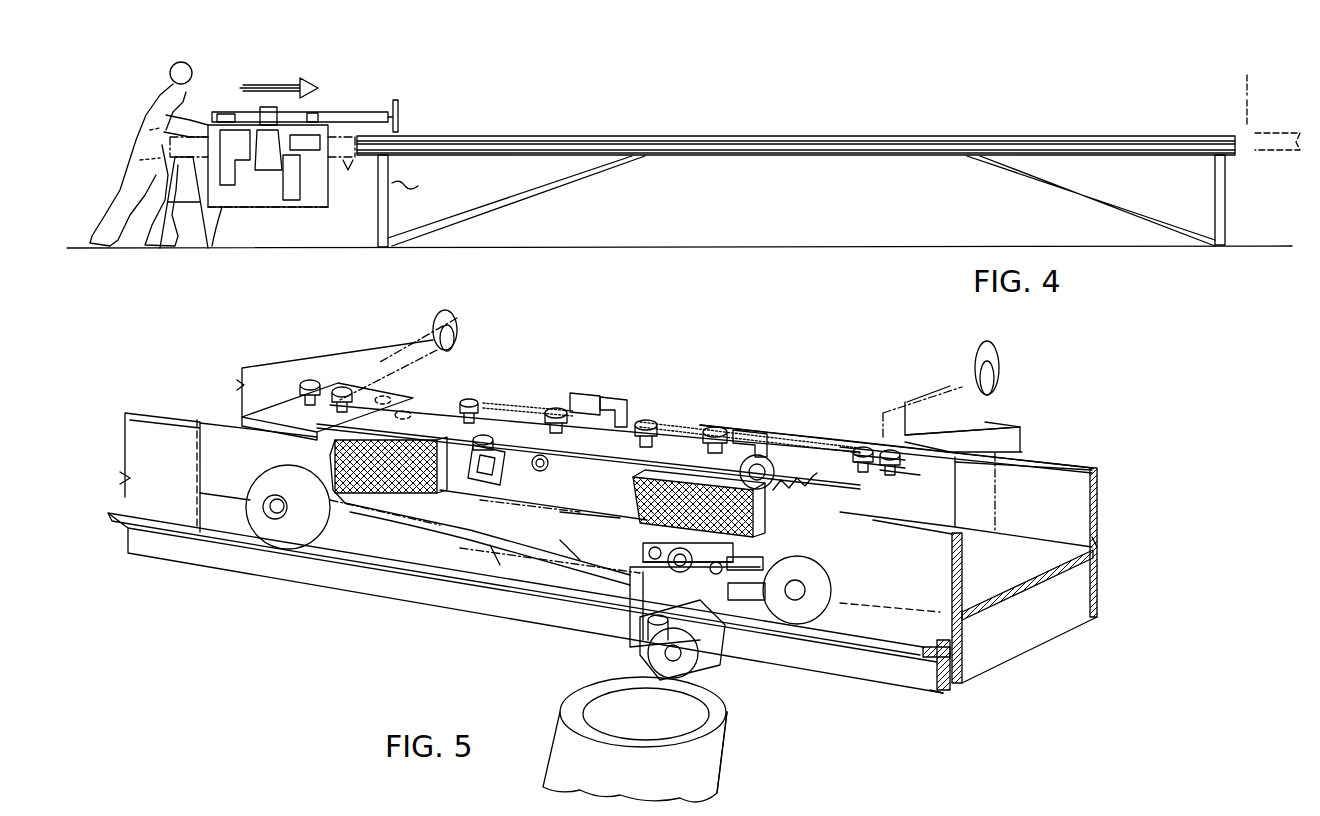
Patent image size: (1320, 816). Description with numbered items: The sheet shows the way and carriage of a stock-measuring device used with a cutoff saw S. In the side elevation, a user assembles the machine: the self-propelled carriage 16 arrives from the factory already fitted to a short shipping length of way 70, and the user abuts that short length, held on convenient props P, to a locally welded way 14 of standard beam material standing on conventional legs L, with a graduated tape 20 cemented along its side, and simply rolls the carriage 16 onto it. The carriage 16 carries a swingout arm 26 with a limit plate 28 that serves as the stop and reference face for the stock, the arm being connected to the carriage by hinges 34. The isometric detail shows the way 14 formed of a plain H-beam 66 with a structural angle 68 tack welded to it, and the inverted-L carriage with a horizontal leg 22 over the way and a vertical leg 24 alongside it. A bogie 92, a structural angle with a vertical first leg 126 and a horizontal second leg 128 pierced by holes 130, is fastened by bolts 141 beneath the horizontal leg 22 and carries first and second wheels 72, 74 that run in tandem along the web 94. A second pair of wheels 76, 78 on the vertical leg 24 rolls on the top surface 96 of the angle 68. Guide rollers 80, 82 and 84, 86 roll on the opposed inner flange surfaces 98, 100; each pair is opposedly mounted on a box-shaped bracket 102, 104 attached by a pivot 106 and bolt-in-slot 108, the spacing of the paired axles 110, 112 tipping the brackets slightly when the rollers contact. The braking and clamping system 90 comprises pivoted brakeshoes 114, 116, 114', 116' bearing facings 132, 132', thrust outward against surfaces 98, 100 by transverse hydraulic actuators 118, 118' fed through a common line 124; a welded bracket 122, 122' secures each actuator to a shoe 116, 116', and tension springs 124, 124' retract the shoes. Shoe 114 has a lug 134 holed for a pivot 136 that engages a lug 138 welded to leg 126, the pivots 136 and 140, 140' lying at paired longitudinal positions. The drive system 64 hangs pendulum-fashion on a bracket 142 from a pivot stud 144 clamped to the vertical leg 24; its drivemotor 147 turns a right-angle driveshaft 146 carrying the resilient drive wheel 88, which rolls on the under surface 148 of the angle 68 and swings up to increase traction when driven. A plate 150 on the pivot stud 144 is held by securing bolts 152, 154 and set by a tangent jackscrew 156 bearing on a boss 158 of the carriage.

In FIG. 4, the linear way 14 is at (378, 160).
In FIG. 5, the linear way 14 is at (183, 552).
In FIG. 4, the self-propelled carriage 16 is at (270, 212).
In FIG. 5, the self-propelled carriage 16 is at (346, 606).
In FIG. 4, the graduated tape 20 is at (535, 137).
In FIG. 5, the horizontal leg 22 is at (985, 440).
In FIG. 5, the vertical leg 24 is at (195, 445).
In FIG. 4, the swingout arm 26 is at (314, 103).
In FIG. 4, the limit plate 28 is at (398, 110).
In FIG. 5, the hinges 34 is at (965, 368).
In FIG. 5, the drive system 64 is at (730, 770).
In FIG. 4, the H-beam 66 is at (775, 138).
In FIG. 5, the H-beam 66 is at (1098, 550).
In FIG. 4, the structural angle 68 is at (800, 155).
In FIG. 5, the structural angle 68 is at (893, 672).
In FIG. 4, the short length of way 70 is at (337, 160).
In FIG. 5, the first wheel 72 is at (660, 430).
In FIG. 5, the second wheel 74 is at (795, 428).
In FIG. 5, the wheel 76 is at (265, 528).
In FIG. 5, the wheel 78 is at (872, 607).
In FIG. 5, the guide roller 80 is at (280, 382).
In FIG. 5, the guide roller 82 is at (380, 395).
In FIG. 5, the guide roller 84 is at (934, 493).
In FIG. 5, the guide roller 86 is at (1000, 450).
In FIG. 5, the drive wheel 88 is at (722, 660).
In FIG. 5, the braking and clamping system 90 is at (555, 508).
In FIG. 5, the bogie 92 is at (750, 455).
In FIG. 5, the web 94 is at (1048, 575).
In FIG. 5, the top surface 96 is at (960, 640).
In FIG. 5, the inner surface 98 is at (970, 557).
In FIG. 5, the inner surface 100 is at (1065, 498).
In FIG. 5, the box-shaped bracket 102 is at (370, 360).
In FIG. 5, the box-shaped bracket 104 is at (960, 500).
In FIG. 5, the pivot 106 is at (340, 380).
In FIG. 5, the bolt-in-slot 108 is at (310, 380).
In FIG. 5, the axle 110 is at (242, 408).
In FIG. 5, the axle 112 is at (342, 388).
In FIG. 5, the brakeshoe 114 is at (459, 556).
In FIG. 5, the brakeshoe 114' is at (543, 503).
In FIG. 5, the brakeshoe 116 is at (587, 380).
In FIG. 5, the brakeshoe 116' is at (860, 424).
In FIG. 5, the hydraulic piston assembly actuator 118 is at (528, 377).
In FIG. 5, the hydraulic piston assembly actuator 118' is at (889, 428).
In FIG. 5, the bracket 122 is at (511, 361).
In FIG. 5, the bracket 122' is at (874, 442).
In FIG. 5, the tension spring 124 is at (602, 379).
In FIG. 5, the tension spring 124' is at (797, 590).
In FIG. 5, the first leg 126 is at (625, 567).
In FIG. 5, the second leg 128 is at (322, 527).
In FIG. 5, the holes 130 is at (760, 455).
In FIG. 5, the facing 132 is at (388, 545).
In FIG. 5, the facing 132' is at (681, 507).
In FIG. 5, the lug 134 is at (520, 548).
In FIG. 5, the pivot 136 is at (520, 555).
In FIG. 5, the lug 138 is at (645, 625).
In FIG. 5, the brakeshoe pivot 140 is at (717, 377).
In FIG. 5, the brakeshoe pivot 140' is at (863, 410).
In FIG. 5, the bolts 141 is at (620, 397).
In FIG. 5, the bracket 142 is at (625, 650).
In FIG. 5, the pivot stud 144 is at (650, 600).
In FIG. 5, the right-angle driveshaft 146 is at (668, 660).
In FIG. 5, the drivemotor 147 is at (667, 787).
In FIG. 5, the under surface 148 is at (928, 688).
In FIG. 5, the plate 150 is at (745, 575).
In FIG. 5, the securing bolt 152 is at (660, 580).
In FIG. 5, the securing bolt 154 is at (765, 600).
In FIG. 5, the tangent jackscrew 156 is at (695, 565).
In FIG. 5, the boss 158 is at (718, 575).
In FIG. 4, the legs L is at (413, 192).
In FIG. 4, the props P is at (347, 174).
In FIG. 4, the cutoff saw S is at (1245, 85).